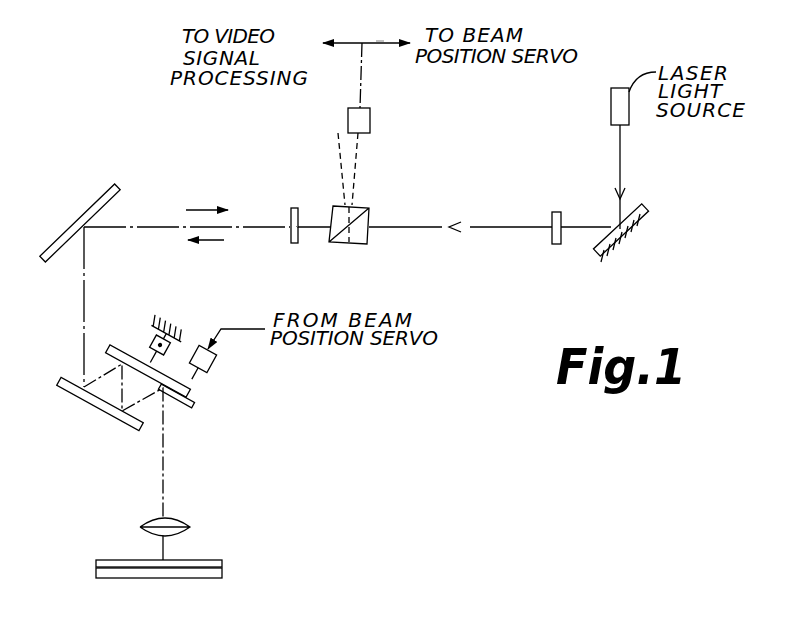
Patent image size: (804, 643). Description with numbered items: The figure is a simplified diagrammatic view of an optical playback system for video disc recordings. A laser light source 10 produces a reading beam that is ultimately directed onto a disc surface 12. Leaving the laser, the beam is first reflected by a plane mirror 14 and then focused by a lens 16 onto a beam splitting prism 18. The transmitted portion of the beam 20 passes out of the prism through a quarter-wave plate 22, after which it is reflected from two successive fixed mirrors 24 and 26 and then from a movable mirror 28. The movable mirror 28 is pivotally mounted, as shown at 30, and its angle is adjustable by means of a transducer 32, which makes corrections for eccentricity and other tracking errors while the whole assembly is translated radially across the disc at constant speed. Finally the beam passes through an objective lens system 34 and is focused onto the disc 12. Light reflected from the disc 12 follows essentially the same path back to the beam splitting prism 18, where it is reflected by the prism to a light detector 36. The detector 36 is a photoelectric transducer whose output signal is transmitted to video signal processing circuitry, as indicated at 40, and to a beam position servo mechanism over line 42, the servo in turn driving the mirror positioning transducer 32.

The laser light source 10 is at (611, 108).
The disc surface 12 is at (213, 560).
The plane mirror 14 is at (631, 202).
The lens 16 is at (552, 243).
The beam splitting prism 18 is at (358, 246).
The transmitted portion of the beam 20 is at (305, 216).
The quarter-wave plate 22 is at (292, 243).
The fixed mirror 24 is at (60, 252).
The fixed mirror 26 is at (94, 398).
The movable mirror 28 is at (175, 400).
The pivotal mounting 30 is at (152, 345).
The transducer 32 is at (214, 363).
The objective lens system 34 is at (180, 517).
The light detector 36 is at (370, 120).
The video signal processing circuitry output 40 is at (350, 40).
The line 42 is at (381, 42).